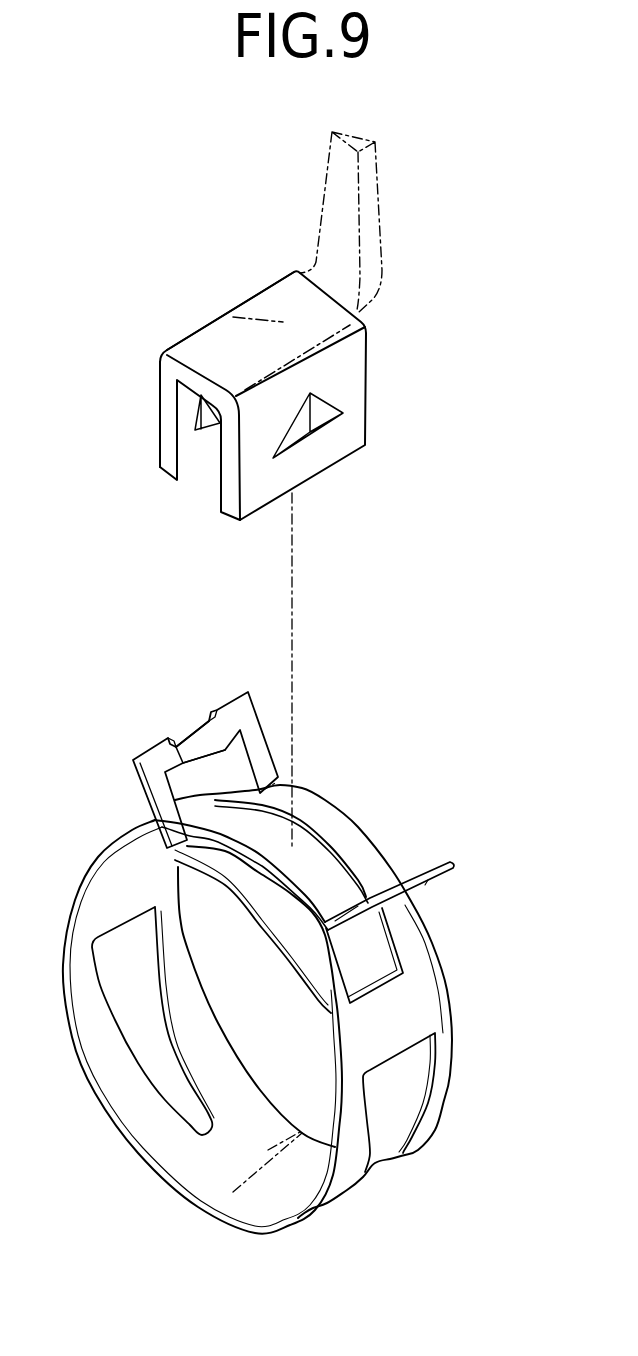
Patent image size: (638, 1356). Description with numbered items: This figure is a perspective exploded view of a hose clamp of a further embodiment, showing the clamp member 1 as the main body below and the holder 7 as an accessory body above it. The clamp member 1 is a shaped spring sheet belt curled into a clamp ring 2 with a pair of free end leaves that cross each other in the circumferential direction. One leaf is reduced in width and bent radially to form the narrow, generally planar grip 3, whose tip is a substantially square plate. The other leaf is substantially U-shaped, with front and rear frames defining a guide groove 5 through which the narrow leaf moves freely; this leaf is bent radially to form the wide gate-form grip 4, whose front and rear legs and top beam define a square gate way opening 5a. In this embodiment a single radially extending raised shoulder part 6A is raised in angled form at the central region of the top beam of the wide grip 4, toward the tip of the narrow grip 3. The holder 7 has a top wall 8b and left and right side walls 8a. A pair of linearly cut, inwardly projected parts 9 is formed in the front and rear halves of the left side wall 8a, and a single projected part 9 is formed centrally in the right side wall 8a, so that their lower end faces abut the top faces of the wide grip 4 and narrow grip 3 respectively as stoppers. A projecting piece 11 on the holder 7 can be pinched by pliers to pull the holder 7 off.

The clamp member 1 is at (395, 746).
The clamp ring 2 is at (215, 1193).
The narrow grip 3 is at (457, 860).
The wide grip 4 is at (205, 717).
The guide groove 5 is at (365, 963).
The gate way opening 5a is at (210, 785).
The raised shoulder part 6A is at (208, 745).
The holder 7 is at (128, 338).
The side wall 8a is at (162, 408).
The top wall 8b is at (220, 318).
The linearly cut and inwardly projected part 9 is at (318, 432).
The projecting piece 11 is at (378, 212).